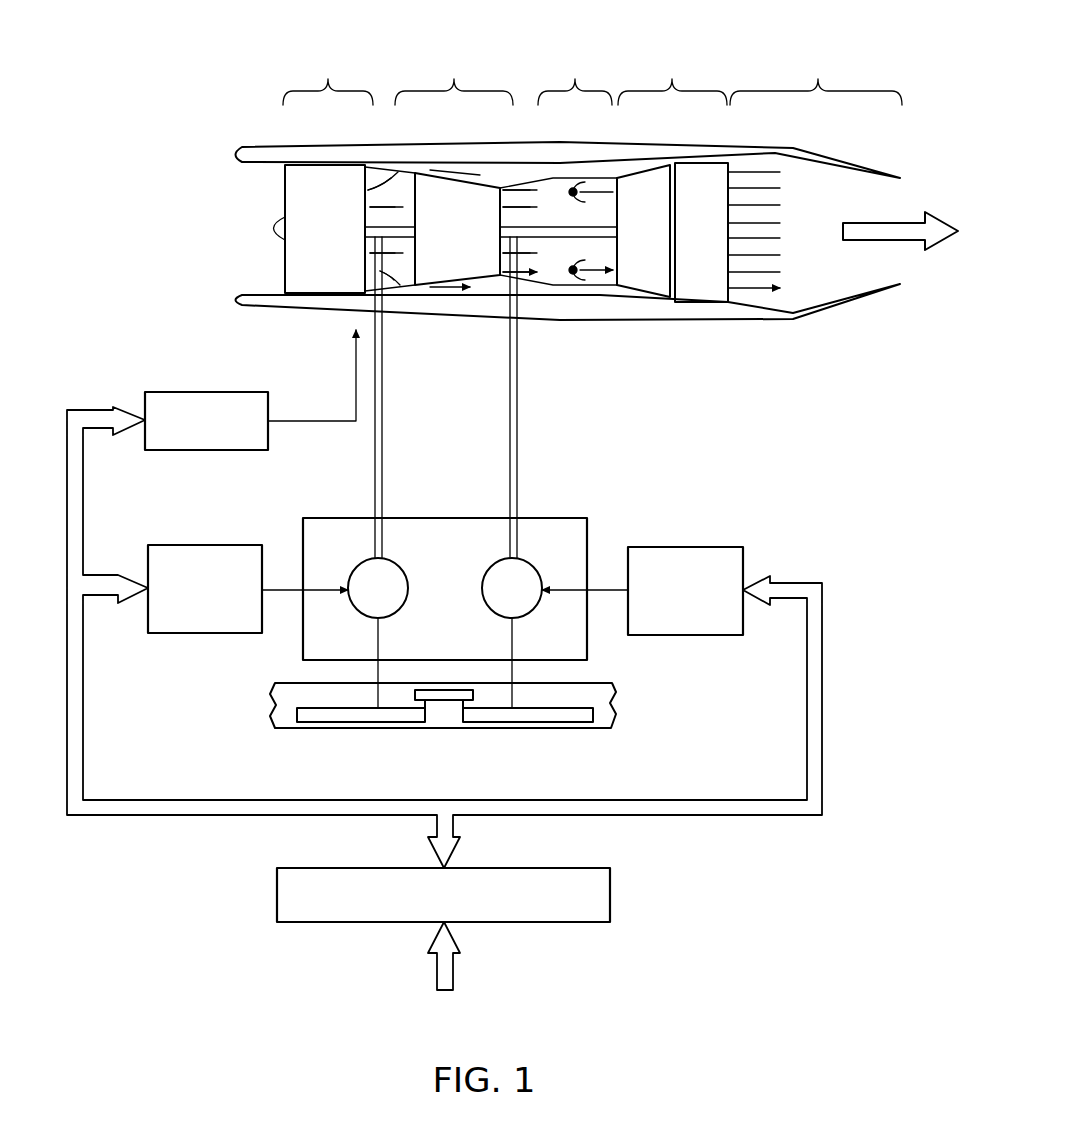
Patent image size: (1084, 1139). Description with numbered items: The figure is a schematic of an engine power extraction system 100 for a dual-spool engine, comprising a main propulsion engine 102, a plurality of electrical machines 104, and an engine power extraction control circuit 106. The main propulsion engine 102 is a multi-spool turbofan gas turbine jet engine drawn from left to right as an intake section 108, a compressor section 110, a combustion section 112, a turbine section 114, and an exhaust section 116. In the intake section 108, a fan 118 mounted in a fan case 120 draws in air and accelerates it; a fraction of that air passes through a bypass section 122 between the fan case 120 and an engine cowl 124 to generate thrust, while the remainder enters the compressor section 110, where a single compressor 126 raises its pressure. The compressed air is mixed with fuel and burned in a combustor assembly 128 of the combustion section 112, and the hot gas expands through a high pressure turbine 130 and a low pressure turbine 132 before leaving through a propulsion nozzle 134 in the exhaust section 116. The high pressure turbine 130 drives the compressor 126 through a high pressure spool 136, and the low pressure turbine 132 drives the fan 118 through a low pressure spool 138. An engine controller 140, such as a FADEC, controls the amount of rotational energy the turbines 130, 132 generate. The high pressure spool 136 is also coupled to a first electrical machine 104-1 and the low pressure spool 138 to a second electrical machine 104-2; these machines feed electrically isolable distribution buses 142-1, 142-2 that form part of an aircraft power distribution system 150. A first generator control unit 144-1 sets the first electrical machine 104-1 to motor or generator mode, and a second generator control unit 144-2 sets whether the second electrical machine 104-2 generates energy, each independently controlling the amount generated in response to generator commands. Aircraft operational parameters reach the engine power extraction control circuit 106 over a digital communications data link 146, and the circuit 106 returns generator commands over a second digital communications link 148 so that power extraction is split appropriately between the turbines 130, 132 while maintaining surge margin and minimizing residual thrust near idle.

The engine power extraction system 100 is at (207, 156).
The main propulsion engine 102 is at (758, 355).
The electrical machines 104 is at (450, 541).
The first electrical machine 104-1 is at (491, 609).
The second electrical machine 104-2 is at (399, 567).
The engine power extraction control circuit 106 is at (612, 900).
The intake section 108 is at (328, 75).
The compressor section 110 is at (454, 75).
The combustion section 112 is at (575, 75).
The turbine section 114 is at (672, 75).
The exhaust section 116 is at (816, 75).
The fan 118 is at (303, 243).
The fan case 120 is at (383, 141).
The bypass section 122 is at (497, 173).
The engine cowl 124 is at (523, 165).
The compressor 126 is at (438, 243).
The combustor assembly 128 is at (575, 180).
The high pressure turbine 130 is at (624, 243).
The low pressure turbine 132 is at (683, 243).
The propulsion nozzle 134 is at (818, 213).
The high pressure spool 136 is at (552, 233).
The low pressure spool 138 is at (370, 229).
The engine controller 140 is at (165, 391).
The first electrically isolable distribution bus 142-1 is at (583, 724).
The second electrically isolable distribution bus 142-2 is at (310, 724).
The first generator control unit 144-1 is at (683, 546).
The second generator control unit 144-2 is at (192, 545).
The digital communications data link 146 is at (436, 975).
The second digital communications link 148 is at (823, 681).
The aircraft power distribution system 150 is at (506, 716).